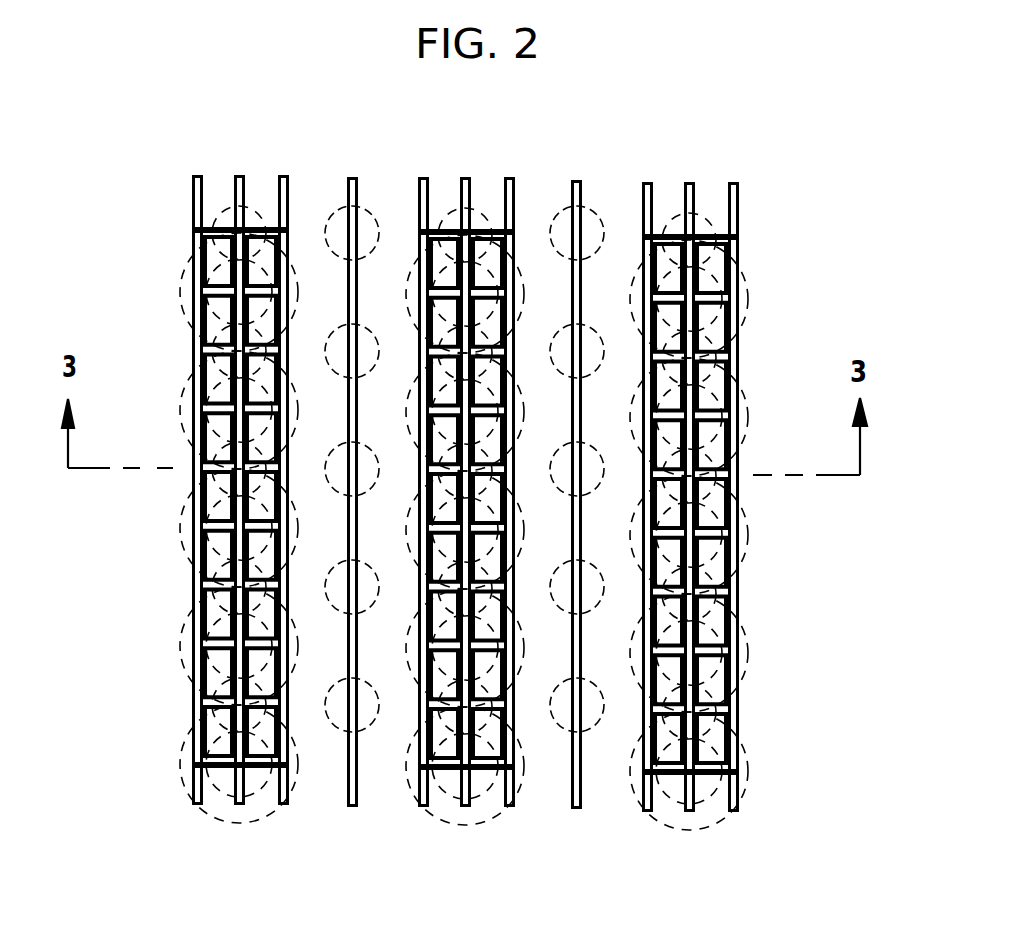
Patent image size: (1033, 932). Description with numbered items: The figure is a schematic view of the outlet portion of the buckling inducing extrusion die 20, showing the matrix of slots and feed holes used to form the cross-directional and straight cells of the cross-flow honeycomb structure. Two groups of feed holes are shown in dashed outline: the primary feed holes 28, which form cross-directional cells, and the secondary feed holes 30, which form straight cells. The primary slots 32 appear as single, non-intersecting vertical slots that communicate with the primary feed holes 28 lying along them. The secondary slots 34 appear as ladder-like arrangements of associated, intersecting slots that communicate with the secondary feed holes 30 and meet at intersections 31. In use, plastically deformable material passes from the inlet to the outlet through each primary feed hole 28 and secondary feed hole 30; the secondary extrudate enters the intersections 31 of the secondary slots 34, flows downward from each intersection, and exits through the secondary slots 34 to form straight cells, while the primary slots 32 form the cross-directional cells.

The extrusion die 20 is at (781, 255).
The primary feed holes 28 is at (598, 328).
The secondary feed holes 30 is at (216, 332).
The intersections 31 is at (660, 542).
The primary slots 32 is at (352, 177).
The secondary slots 34 is at (192, 608).